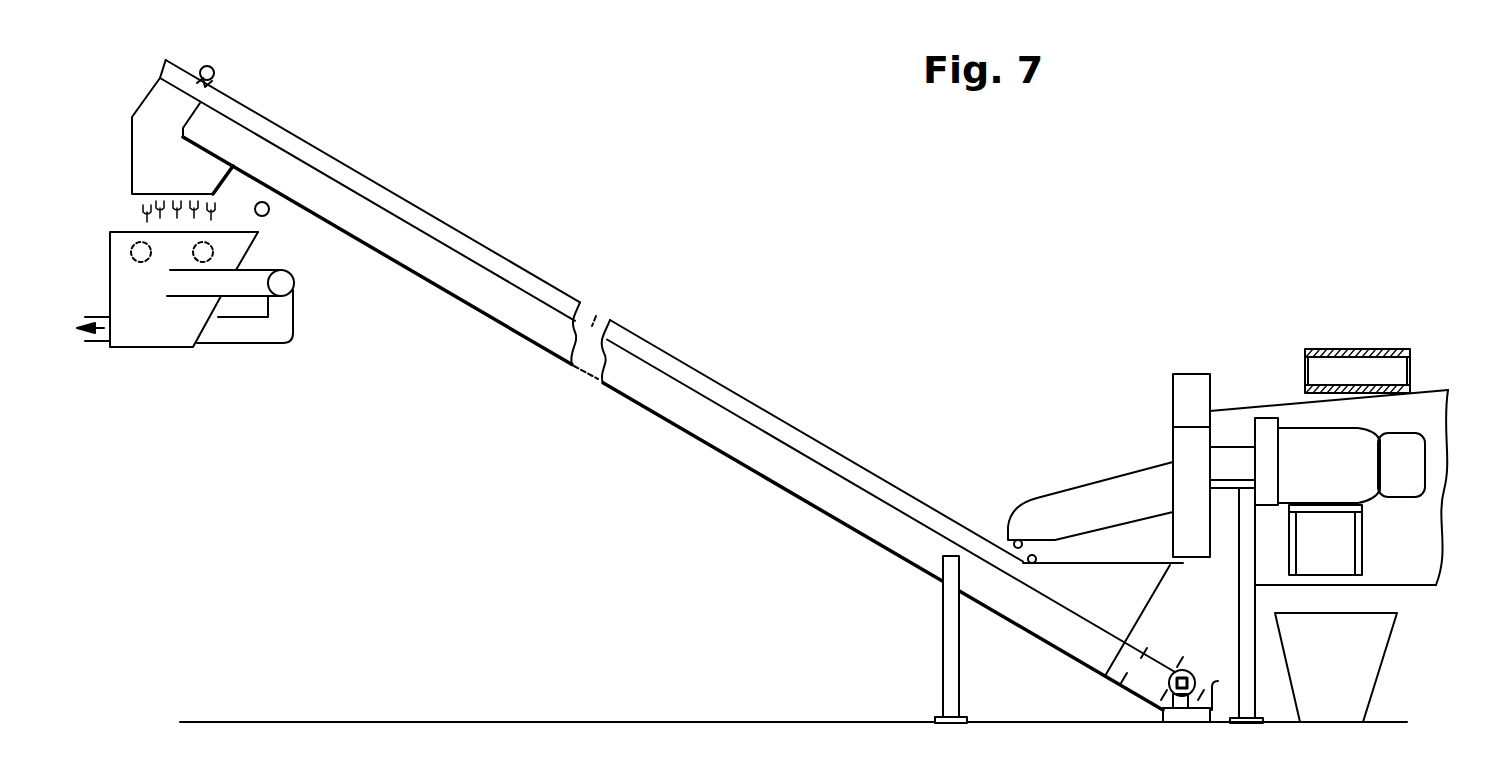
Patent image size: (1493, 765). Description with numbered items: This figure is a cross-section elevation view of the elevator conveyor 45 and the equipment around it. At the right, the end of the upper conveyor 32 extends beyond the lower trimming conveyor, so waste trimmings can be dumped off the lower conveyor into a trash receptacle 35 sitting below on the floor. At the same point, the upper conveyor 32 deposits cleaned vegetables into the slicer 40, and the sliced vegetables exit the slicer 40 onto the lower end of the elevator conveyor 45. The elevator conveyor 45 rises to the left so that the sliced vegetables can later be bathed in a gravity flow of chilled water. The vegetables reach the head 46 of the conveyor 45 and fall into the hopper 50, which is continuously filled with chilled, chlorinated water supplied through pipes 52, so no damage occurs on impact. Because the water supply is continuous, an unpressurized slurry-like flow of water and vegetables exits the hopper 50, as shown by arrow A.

The upper conveyor 32 is at (1378, 345).
The trash receptacle 35 is at (1353, 676).
The slicer 40 is at (1362, 458).
The elevator conveyor 45 is at (798, 498).
The head of conveyor 46 is at (175, 103).
The hopper 50 is at (172, 332).
The pipes 52 is at (137, 243).
The arrow A is at (102, 332).